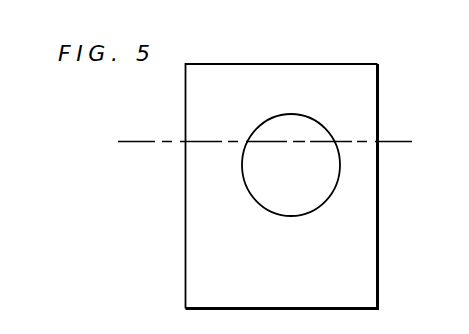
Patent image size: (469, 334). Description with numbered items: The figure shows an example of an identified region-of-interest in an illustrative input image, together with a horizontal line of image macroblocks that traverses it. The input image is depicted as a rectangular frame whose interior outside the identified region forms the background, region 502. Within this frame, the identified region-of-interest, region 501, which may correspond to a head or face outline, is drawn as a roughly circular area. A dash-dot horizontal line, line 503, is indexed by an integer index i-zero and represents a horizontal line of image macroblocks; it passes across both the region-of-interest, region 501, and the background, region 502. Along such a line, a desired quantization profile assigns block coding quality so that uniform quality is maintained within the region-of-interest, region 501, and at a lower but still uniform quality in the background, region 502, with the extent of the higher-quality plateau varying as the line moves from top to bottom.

The region-of-interest 501 is at (263, 118).
The background region 502 is at (380, 215).
The horizontal line of image macroblocks 503 is at (380, 143).